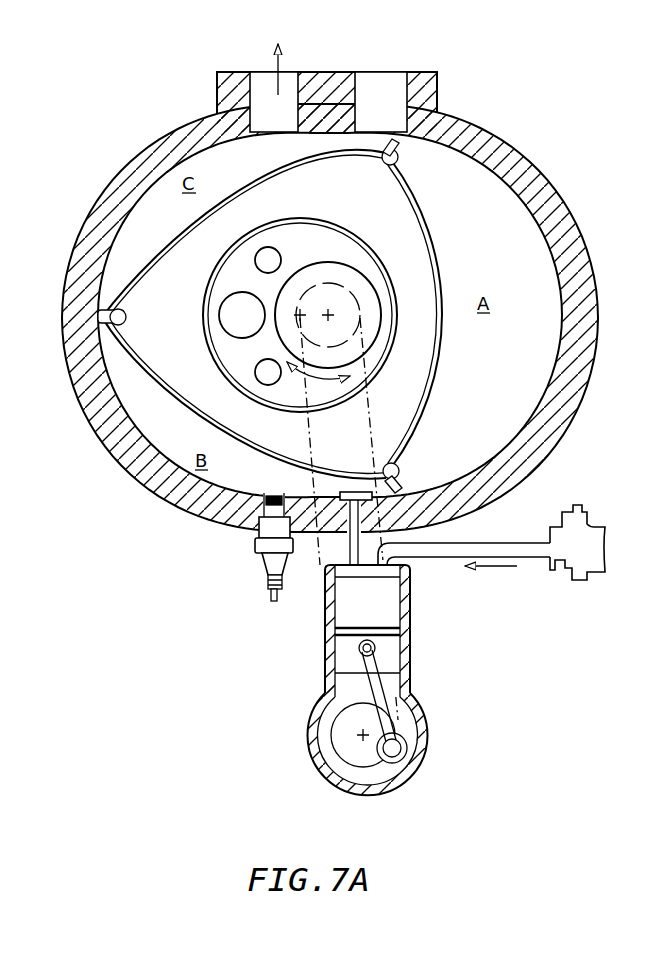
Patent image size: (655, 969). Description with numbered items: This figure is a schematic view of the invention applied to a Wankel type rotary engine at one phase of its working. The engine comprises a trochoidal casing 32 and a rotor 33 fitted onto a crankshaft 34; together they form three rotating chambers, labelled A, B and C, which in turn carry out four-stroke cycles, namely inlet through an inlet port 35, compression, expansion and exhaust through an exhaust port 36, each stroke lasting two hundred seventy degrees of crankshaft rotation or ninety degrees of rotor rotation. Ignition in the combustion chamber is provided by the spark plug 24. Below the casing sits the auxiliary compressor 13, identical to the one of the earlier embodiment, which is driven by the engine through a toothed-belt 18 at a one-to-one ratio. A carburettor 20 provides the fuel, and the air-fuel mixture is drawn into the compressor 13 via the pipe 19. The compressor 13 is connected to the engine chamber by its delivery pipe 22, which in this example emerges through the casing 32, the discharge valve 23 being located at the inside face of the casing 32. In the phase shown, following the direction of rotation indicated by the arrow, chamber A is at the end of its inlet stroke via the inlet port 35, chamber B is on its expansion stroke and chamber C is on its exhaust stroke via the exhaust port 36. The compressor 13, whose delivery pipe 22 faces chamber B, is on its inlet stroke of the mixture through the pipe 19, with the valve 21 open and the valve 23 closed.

The auxiliary compressor 13 is at (437, 731).
The toothed-belt 18 is at (313, 560).
The pipe 19 is at (518, 541).
The carburettor 20 is at (590, 504).
The valve 21 is at (372, 580).
The delivery pipe 22 is at (342, 547).
The discharge valve 23 is at (346, 484).
The spark plug 24 is at (254, 575).
The trochoidal casing 32 is at (521, 145).
The rotor 33 is at (390, 230).
The crankshaft 34 is at (245, 354).
The inlet port 35 is at (383, 70).
The exhaust port 36 is at (261, 70).